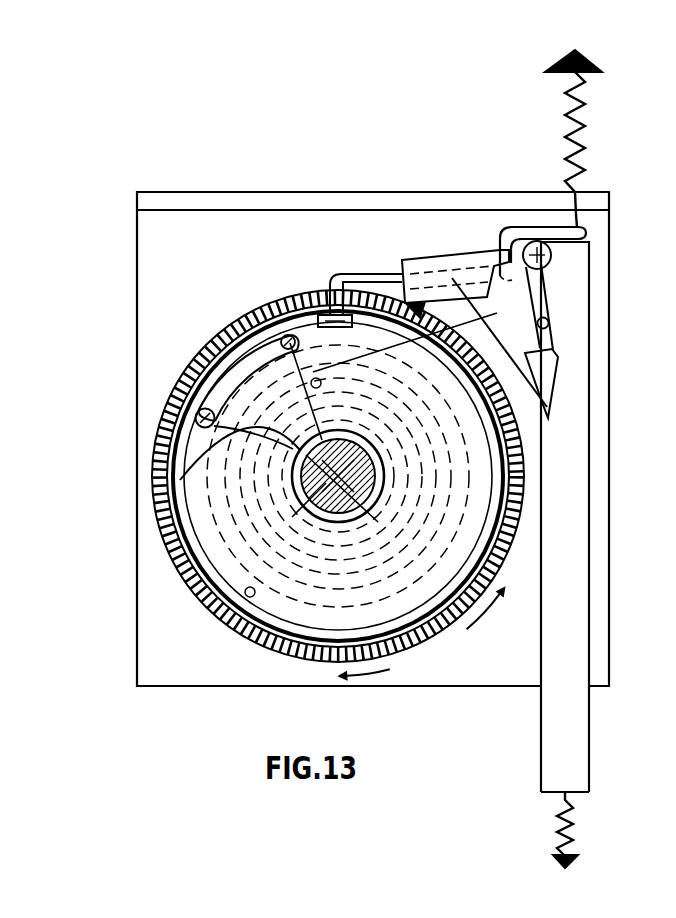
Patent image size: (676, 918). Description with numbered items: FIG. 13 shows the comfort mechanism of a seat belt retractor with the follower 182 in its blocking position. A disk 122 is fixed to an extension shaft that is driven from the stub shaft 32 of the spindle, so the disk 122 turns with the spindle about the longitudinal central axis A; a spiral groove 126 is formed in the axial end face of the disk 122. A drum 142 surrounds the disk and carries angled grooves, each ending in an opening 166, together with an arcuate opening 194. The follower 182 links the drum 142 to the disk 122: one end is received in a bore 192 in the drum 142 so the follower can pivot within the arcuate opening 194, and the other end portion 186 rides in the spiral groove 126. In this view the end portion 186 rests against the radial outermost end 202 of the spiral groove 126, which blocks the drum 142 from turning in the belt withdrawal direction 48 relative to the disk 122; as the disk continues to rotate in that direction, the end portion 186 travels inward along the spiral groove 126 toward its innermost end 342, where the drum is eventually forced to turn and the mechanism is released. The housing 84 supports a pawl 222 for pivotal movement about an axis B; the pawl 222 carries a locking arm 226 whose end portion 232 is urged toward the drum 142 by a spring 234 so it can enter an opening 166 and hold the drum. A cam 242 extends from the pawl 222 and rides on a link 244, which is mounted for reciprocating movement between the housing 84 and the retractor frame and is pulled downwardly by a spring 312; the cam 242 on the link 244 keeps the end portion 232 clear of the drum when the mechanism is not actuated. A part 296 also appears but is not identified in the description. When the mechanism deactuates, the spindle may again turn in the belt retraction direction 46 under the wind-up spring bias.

The housing 84 is at (182, 200).
The drum 142 is at (520, 512).
The link 244 is at (575, 720).
The spring 234 is at (580, 118).
The spring 312 is at (567, 823).
The pawl 222 is at (447, 252).
The axis B is at (553, 257).
The locking arm 226 is at (375, 262).
The end portion of the locking arm 232 is at (344, 273).
The cam 242 is at (543, 363).
The pin 296 is at (553, 332).
The arcuate opening 194 is at (476, 320).
The opening 166 is at (247, 327).
The end portion of the follower 186 is at (268, 295).
The radial outermost end of the spiral groove 202 is at (216, 347).
The disk 122 is at (203, 480).
The spiral groove 126 is at (262, 578).
The follower 182 is at (238, 380).
The bore 192 is at (200, 413).
The stub shaft 32 is at (344, 495).
The innermost end of the spiral groove 342 is at (362, 522).
The longitudinal central axis of the drum A is at (302, 507).
The belt withdrawal direction 48 is at (473, 628).
The belt retraction direction 46 is at (390, 672).